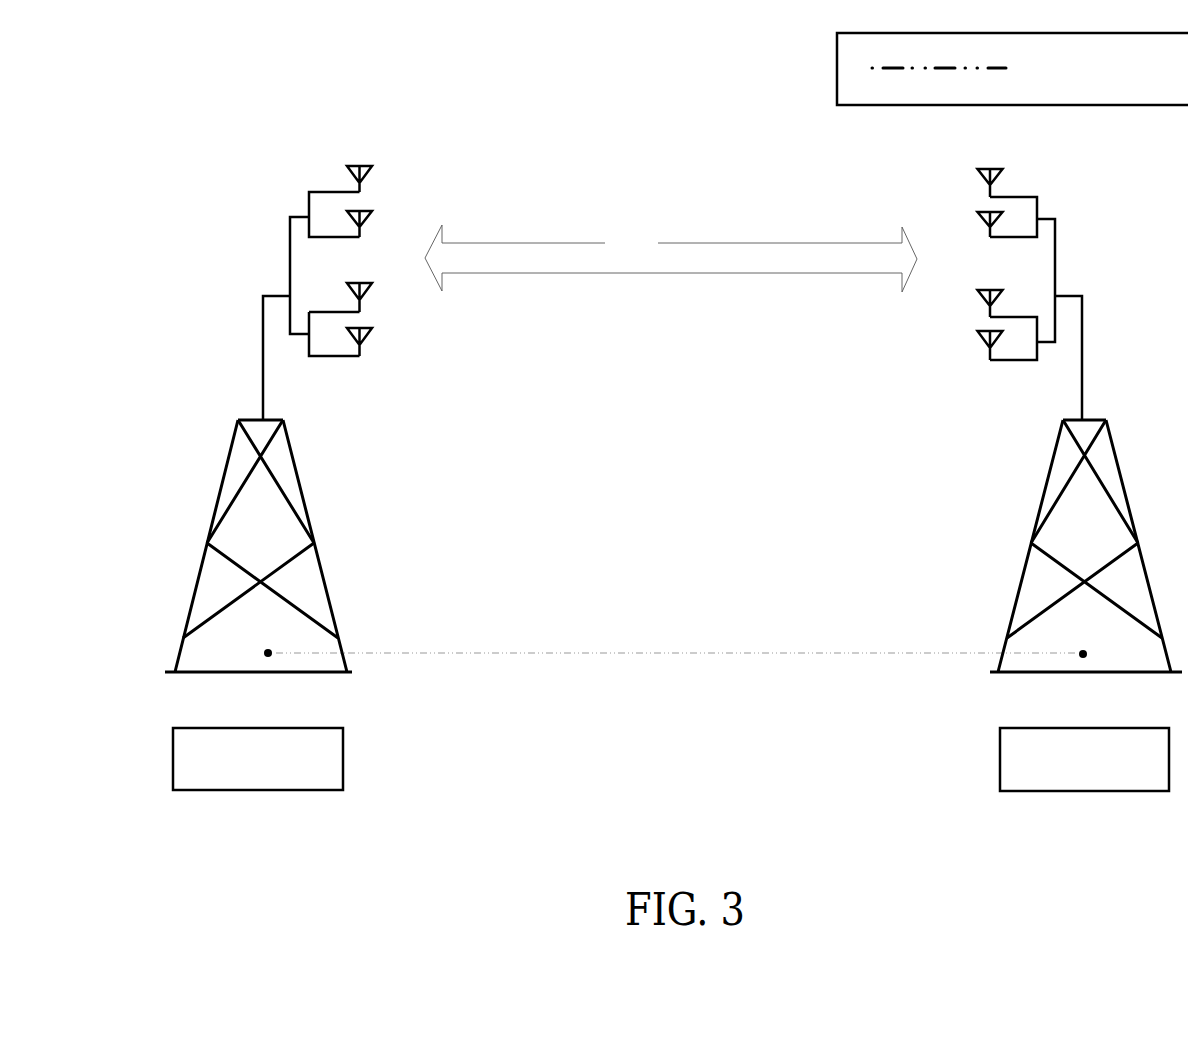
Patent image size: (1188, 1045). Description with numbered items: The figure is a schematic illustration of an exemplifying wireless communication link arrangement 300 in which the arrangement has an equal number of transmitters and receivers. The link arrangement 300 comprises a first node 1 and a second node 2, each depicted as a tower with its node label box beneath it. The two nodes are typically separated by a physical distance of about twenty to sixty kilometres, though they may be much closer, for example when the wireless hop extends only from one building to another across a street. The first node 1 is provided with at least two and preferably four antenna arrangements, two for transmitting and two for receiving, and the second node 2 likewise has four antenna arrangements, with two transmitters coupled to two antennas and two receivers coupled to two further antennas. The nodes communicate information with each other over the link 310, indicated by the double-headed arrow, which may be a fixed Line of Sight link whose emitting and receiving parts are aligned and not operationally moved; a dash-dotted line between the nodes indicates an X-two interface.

The wireless communication link arrangement 300 is at (803, 778).
The link 310 is at (671, 258).
The first node 1 is at (290, 477).
The second node 2 is at (1055, 477).